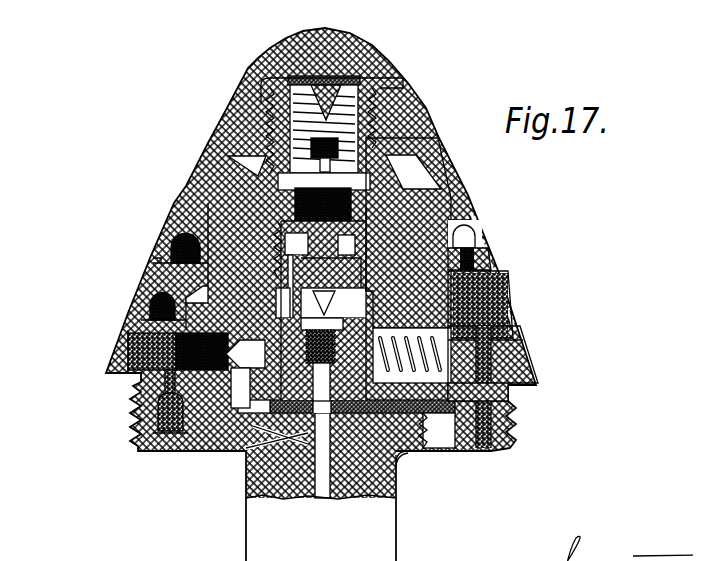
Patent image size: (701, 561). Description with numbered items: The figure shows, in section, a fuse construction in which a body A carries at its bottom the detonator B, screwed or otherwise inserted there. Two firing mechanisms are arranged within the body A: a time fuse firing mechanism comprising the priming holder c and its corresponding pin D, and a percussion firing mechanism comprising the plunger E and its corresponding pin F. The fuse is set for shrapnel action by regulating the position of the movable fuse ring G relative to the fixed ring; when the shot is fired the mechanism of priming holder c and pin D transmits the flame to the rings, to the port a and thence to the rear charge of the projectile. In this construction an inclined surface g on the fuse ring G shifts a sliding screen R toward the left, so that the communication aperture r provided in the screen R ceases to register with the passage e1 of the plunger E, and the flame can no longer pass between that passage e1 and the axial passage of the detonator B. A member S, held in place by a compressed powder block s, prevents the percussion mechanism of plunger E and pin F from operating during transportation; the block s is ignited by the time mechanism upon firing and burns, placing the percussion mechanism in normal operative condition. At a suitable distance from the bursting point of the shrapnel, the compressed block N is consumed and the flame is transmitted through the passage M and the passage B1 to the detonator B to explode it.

The pin D is at (366, 70).
The priming holder c is at (340, 143).
The member S is at (360, 213).
The compressed powder block s is at (285, 200).
The movable fuse ring G is at (153, 273).
The compressed block N is at (140, 341).
The passage M is at (230, 381).
The body A is at (127, 425).
The port a is at (167, 427).
The passage e1 is at (235, 437).
The passage B1 is at (275, 427).
The communication aperture r is at (365, 470).
The detonator B is at (392, 480).
The inclined surface g is at (485, 268).
The pin F is at (317, 297).
The sliding screen R is at (452, 352).
The plunger E is at (455, 393).